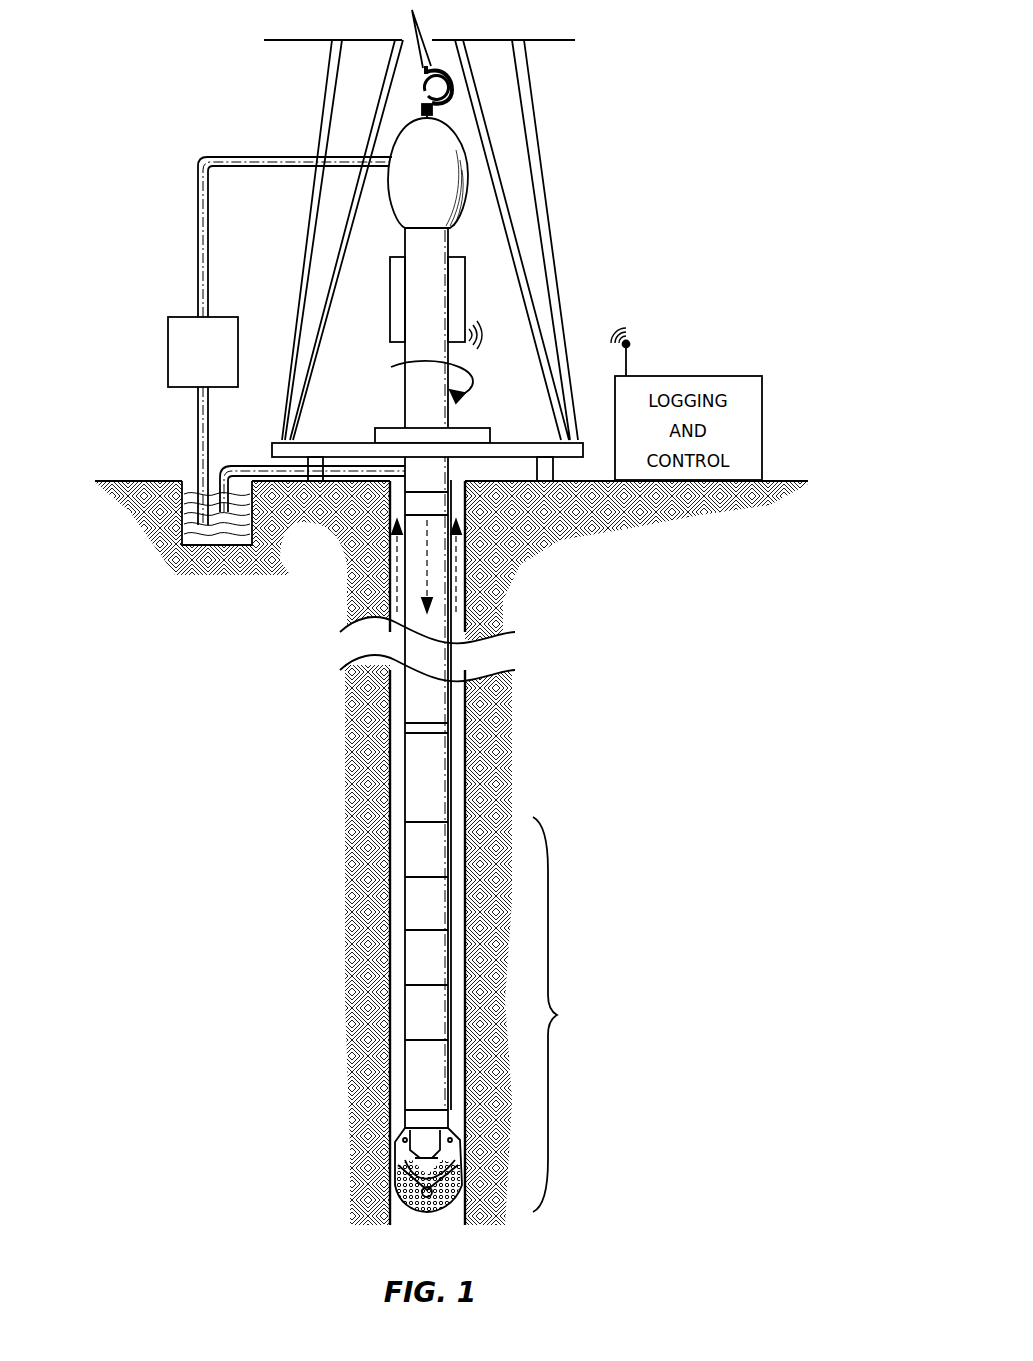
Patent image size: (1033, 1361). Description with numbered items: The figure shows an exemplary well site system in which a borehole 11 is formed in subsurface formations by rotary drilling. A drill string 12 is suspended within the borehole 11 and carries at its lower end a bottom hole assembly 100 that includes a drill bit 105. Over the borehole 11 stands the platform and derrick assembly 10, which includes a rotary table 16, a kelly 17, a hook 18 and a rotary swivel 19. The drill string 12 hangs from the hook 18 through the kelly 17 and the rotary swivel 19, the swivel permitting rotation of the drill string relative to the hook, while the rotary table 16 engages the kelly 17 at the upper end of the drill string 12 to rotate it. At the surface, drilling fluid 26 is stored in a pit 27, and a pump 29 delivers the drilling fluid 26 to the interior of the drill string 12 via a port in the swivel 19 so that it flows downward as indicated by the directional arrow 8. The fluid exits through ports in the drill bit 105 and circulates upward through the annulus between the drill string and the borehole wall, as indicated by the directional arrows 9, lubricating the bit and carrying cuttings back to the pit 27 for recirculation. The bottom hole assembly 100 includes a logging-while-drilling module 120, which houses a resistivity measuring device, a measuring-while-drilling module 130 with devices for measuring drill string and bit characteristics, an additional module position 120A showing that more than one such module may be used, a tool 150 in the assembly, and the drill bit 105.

The platform and derrick assembly 10 is at (554, 141).
The hook 18 is at (424, 68).
The rotary swivel 19 is at (400, 204).
The kelly 17 is at (413, 335).
The rotary table 16 is at (472, 434).
The drill string 12 is at (425, 484).
The borehole 11 is at (458, 497).
The pump 29 is at (182, 392).
The pit 27 is at (190, 492).
The drilling fluid 26 is at (215, 540).
The directional arrows 9 is at (397, 548).
The directional arrow 8 is at (422, 568).
The bottom hole assembly 100 is at (503, 967).
The logging-while-drilling module 120 is at (412, 903).
The measuring-while-drilling module 130 is at (412, 958).
The LWD and/or MWD module 120A is at (412, 1013).
The measurement tool 150 is at (412, 1073).
The drill bit 105 is at (400, 1157).